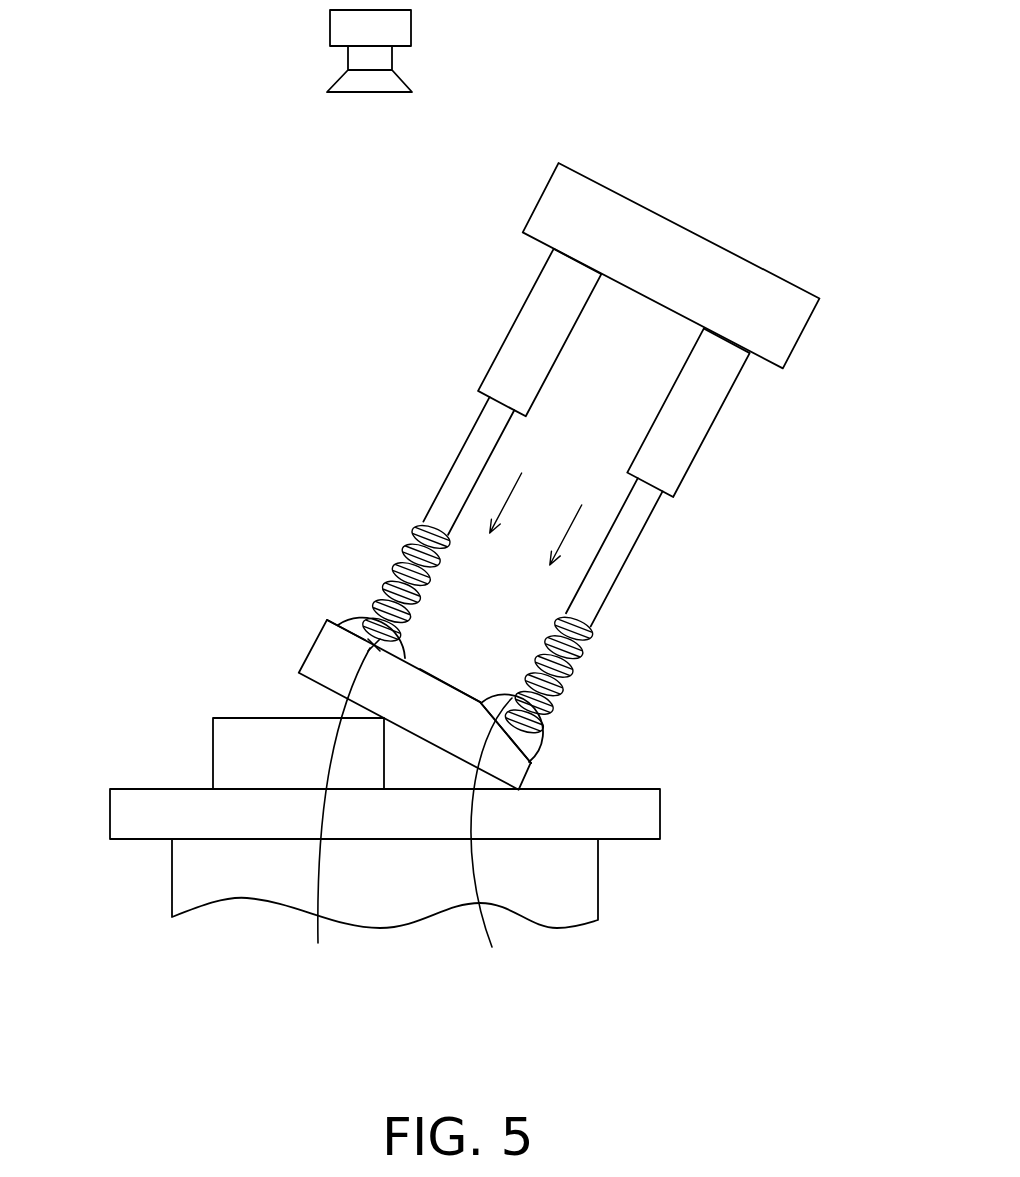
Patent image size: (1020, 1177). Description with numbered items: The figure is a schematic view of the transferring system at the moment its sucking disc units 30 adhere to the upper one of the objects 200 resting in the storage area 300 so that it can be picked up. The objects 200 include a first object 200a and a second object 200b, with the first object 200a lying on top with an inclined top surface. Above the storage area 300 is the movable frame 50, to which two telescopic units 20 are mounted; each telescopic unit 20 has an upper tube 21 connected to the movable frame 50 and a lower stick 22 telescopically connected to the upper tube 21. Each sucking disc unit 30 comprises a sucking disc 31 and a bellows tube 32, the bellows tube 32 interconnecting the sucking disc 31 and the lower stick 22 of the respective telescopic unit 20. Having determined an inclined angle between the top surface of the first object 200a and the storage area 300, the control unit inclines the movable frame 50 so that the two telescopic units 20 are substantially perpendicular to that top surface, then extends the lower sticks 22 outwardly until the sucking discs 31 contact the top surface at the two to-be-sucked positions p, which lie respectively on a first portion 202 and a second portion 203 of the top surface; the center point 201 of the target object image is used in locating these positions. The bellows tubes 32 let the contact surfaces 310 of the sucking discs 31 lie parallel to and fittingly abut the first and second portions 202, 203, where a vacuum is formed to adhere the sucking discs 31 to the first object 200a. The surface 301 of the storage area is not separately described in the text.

The movable frame 50 is at (697, 262).
The telescopic unit 20 is at (530, 333).
The upper tube 21 is at (675, 452).
The lower stick 22 is at (648, 520).
The sucking disc unit 30 is at (519, 695).
The sucking disc 31 is at (530, 743).
The bellows tube 32 is at (558, 685).
The object 200 is at (297, 651).
The first object 200a is at (325, 652).
The second object 200b is at (227, 748).
The center point 201 is at (443, 677).
The first portion 202 is at (507, 712).
The second portion 203 is at (337, 622).
The to-be-sucked position p is at (373, 643).
The storage area 300 is at (138, 822).
The table top 301 is at (140, 790).
The contact surface 310 is at (412, 820).